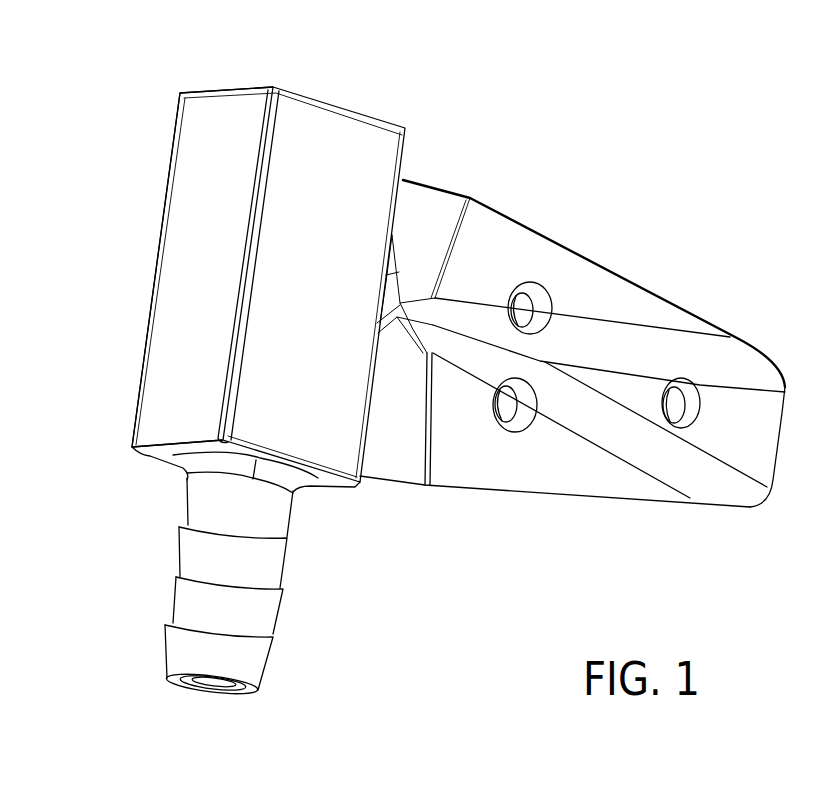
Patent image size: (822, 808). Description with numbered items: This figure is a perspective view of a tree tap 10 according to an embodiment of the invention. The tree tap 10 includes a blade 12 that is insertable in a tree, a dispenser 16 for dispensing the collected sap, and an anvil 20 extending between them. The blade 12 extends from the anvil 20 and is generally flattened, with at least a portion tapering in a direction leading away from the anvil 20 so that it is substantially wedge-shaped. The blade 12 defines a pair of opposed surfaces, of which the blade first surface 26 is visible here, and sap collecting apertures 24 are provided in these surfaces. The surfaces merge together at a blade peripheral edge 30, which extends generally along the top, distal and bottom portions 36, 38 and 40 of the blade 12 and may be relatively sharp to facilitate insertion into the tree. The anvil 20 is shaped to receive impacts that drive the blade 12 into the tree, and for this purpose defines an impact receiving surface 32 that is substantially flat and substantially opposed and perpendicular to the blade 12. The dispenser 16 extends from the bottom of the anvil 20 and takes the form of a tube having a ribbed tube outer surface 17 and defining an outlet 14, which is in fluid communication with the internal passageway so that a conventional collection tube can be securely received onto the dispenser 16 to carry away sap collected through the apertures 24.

The tree tap 10 is at (608, 150).
The blade 12 is at (670, 293).
The outlet 14 is at (218, 682).
The dispenser 16 is at (180, 580).
The ribbed tube outer surface 17 is at (226, 610).
The anvil 20 is at (177, 290).
The sap collecting apertures 24 is at (680, 410).
The blade first surface 26 is at (478, 460).
The blade peripheral edge 30 is at (484, 203).
The impact receiving surface 32 is at (216, 194).
The top portion 36 is at (560, 250).
The distal portion 38 is at (786, 388).
The bottom portion 40 is at (571, 487).